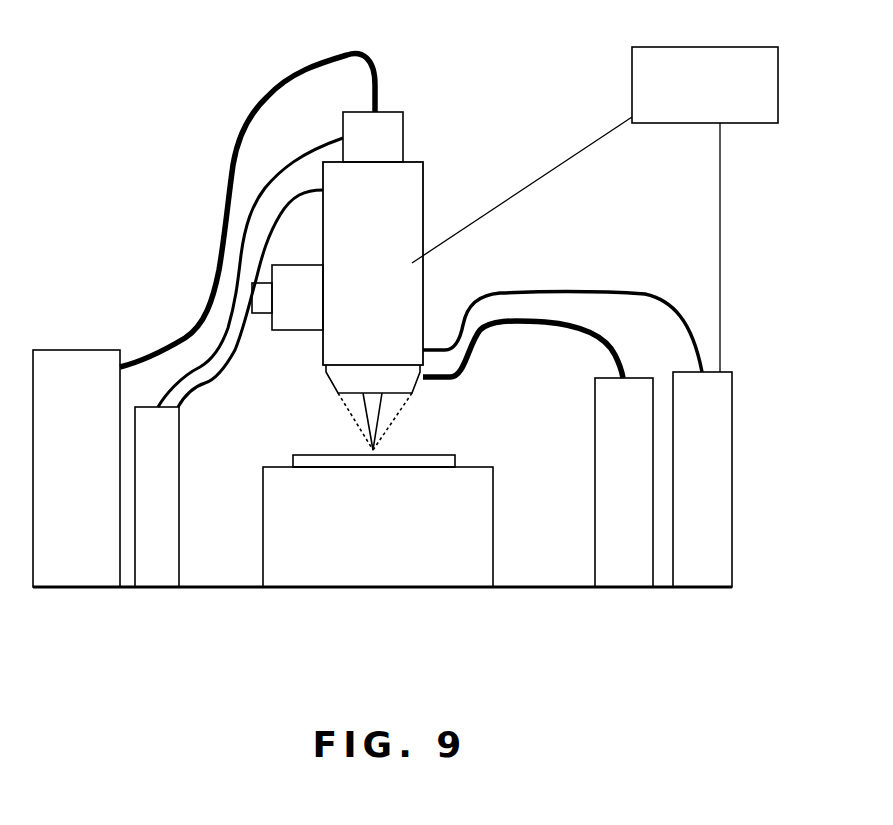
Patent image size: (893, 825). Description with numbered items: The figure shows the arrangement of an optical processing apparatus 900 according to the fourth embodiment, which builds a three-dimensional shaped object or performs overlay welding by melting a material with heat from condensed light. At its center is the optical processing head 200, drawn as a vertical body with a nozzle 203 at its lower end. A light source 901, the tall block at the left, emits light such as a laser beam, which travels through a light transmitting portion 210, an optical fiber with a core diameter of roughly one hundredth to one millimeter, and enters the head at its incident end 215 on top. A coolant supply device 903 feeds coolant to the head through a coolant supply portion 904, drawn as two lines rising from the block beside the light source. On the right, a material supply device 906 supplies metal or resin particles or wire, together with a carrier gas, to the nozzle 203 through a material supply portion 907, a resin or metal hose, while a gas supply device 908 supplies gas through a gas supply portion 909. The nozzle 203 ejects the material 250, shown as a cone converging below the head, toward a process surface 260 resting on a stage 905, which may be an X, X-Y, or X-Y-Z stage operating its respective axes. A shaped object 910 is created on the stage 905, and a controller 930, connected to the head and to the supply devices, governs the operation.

The optical processing apparatus 900 is at (138, 132).
The optical processing head 200 is at (423, 156).
The nozzle 203 is at (337, 377).
The light transmitting portion 210 is at (240, 123).
The incident end 215 is at (380, 107).
The material 250 is at (397, 422).
The process surface 260 is at (330, 455).
The light source 901 is at (53, 357).
The coolant supply device 903 is at (152, 575).
The coolant supply portion 904 is at (203, 377).
The stage 905 is at (302, 575).
The material supply device 906 is at (630, 575).
The material supply portion 907 is at (577, 327).
The gas supply device 908 is at (702, 575).
The gas supply portion 909 is at (612, 292).
The shaped object 910 is at (410, 463).
The controller 930 is at (632, 82).